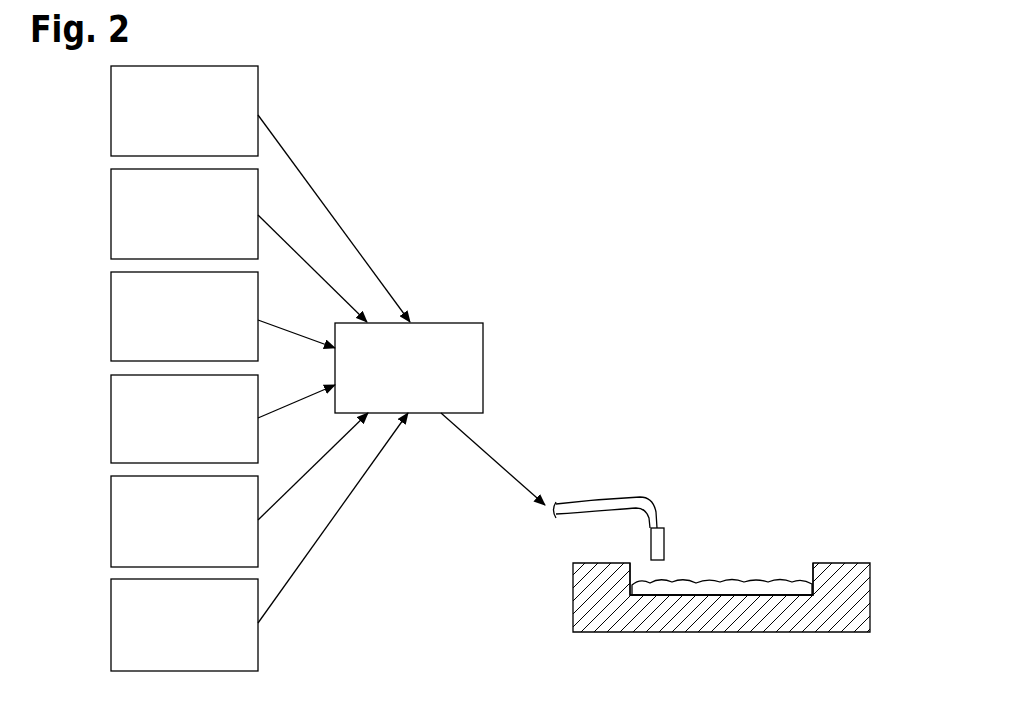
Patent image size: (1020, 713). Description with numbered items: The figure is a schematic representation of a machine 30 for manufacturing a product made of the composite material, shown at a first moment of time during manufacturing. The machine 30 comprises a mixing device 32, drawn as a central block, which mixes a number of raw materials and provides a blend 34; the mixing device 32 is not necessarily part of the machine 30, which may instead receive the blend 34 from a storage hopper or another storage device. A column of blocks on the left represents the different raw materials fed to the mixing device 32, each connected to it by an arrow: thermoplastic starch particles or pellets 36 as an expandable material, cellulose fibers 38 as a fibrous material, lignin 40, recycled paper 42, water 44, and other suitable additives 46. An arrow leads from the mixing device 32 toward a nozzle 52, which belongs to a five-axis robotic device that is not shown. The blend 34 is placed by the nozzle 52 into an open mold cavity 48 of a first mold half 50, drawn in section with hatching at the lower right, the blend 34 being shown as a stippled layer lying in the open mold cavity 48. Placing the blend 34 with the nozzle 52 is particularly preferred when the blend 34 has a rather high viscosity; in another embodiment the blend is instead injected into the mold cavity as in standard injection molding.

The machine 30 is at (692, 350).
The mixing device 32 is at (483, 362).
The blend 34 is at (735, 572).
The thermoplastic starch particles or pellets 36 is at (111, 638).
The cellulose fibers 38 is at (111, 532).
The lignin 40 is at (111, 428).
The recycled paper 42 is at (111, 323).
The water 44 is at (111, 223).
The additives 46 is at (111, 118).
The open mold cavity 48 is at (815, 568).
The first mold half 50 is at (848, 572).
The nozzle 52 is at (657, 545).